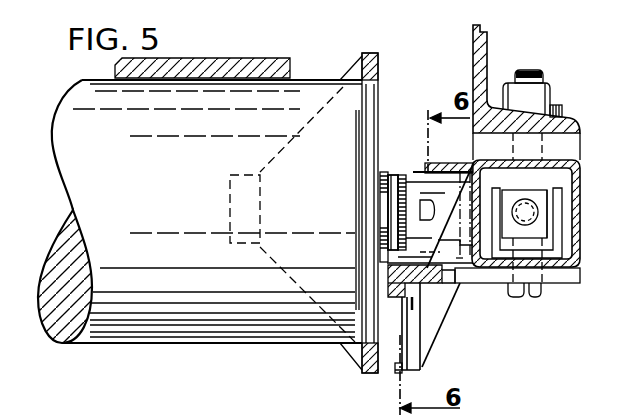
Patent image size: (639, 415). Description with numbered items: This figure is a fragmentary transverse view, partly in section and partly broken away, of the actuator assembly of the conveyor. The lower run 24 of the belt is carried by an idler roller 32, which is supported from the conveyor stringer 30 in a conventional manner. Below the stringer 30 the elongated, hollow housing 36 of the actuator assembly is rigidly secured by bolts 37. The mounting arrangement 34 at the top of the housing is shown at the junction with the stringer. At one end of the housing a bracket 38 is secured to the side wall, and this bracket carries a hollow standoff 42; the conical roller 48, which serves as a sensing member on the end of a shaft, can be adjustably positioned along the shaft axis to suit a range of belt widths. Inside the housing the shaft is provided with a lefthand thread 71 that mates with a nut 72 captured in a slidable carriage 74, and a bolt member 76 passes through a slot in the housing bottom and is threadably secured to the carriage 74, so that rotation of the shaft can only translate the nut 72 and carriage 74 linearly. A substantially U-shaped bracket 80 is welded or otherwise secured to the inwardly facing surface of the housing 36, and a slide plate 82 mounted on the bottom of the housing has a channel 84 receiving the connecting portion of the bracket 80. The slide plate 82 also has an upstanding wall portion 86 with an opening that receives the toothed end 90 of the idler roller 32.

The lower run 24 is at (248, 66).
The conveyor stringer 30 is at (476, 82).
The idler roller 32 is at (80, 172).
The mounting assembly 34 is at (575, 105).
The housing 36 is at (576, 244).
The bolt 37 is at (487, 70).
The bracket 38 is at (462, 168).
The standoff 42 is at (418, 177).
The conical roller 48 is at (372, 72).
The lefthand thread 71 is at (537, 210).
The nut 72 is at (535, 190).
The carriage 74 is at (550, 222).
The bolt member 76 is at (516, 298).
The U-shaped bracket 80 is at (433, 340).
The slide plate 82 is at (566, 283).
The channel 84 is at (432, 325).
The upstanding wall portion 86 is at (392, 192).
The toothed end 90 is at (393, 175).